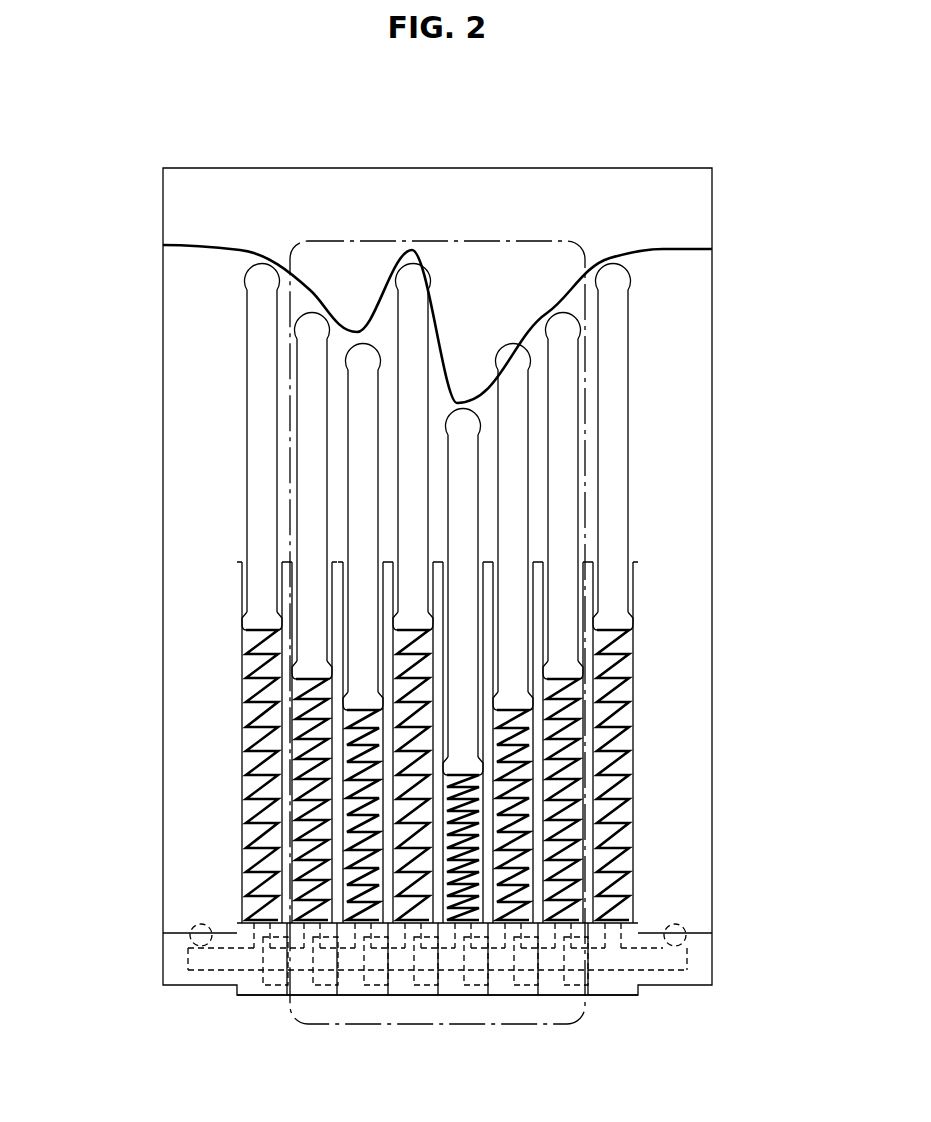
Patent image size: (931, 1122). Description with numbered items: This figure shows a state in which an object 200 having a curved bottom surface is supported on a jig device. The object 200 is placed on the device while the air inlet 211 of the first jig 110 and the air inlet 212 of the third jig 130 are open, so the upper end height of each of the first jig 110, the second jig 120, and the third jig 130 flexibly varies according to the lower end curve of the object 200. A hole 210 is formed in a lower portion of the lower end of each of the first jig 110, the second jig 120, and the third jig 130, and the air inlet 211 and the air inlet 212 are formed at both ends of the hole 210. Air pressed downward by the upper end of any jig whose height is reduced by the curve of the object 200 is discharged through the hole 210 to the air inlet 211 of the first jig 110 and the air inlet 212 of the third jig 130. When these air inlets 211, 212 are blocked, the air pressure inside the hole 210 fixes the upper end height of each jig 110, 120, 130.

The object 200 is at (437, 168).
The first jig 110 is at (259, 430).
The second jig 120 is at (438, 1026).
The third jig 130 is at (613, 430).
The hole 210 is at (224, 972).
The air inlet 211 is at (193, 927).
The air inlet 212 is at (683, 926).